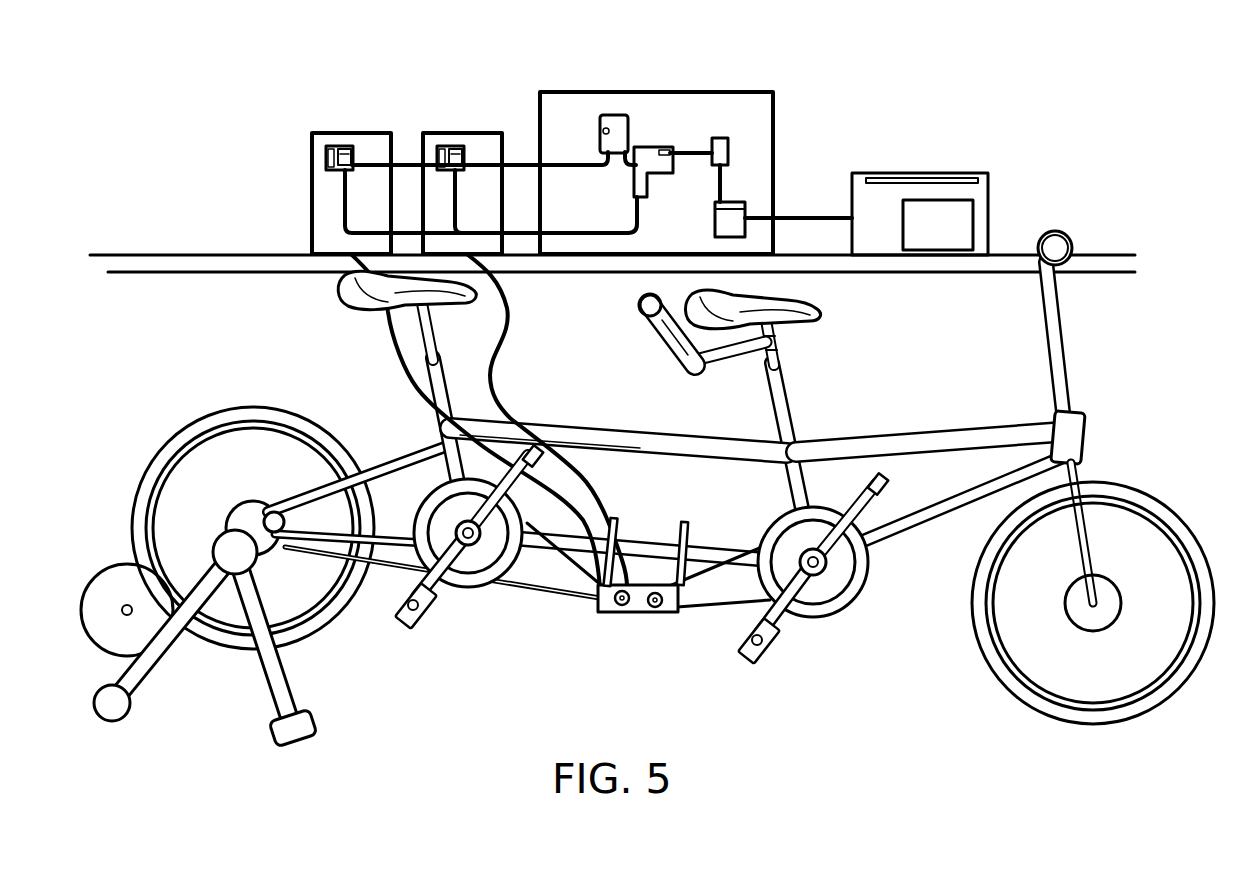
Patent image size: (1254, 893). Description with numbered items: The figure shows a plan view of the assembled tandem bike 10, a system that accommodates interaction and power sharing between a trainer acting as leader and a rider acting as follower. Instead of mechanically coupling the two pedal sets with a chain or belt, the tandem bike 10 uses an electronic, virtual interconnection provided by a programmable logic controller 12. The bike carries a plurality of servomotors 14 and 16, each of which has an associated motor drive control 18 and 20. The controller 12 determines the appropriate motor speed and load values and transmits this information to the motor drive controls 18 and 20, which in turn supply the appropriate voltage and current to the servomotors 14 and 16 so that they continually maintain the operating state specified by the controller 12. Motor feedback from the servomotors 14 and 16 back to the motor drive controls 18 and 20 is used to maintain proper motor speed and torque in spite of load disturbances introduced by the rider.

The tandem bike 10 is at (1133, 345).
The programmable logic controller 12 is at (688, 84).
The servomotor 14 is at (617, 612).
The servomotor 16 is at (661, 617).
The motor drive control 18 is at (462, 132).
The motor drive control 20 is at (312, 137).